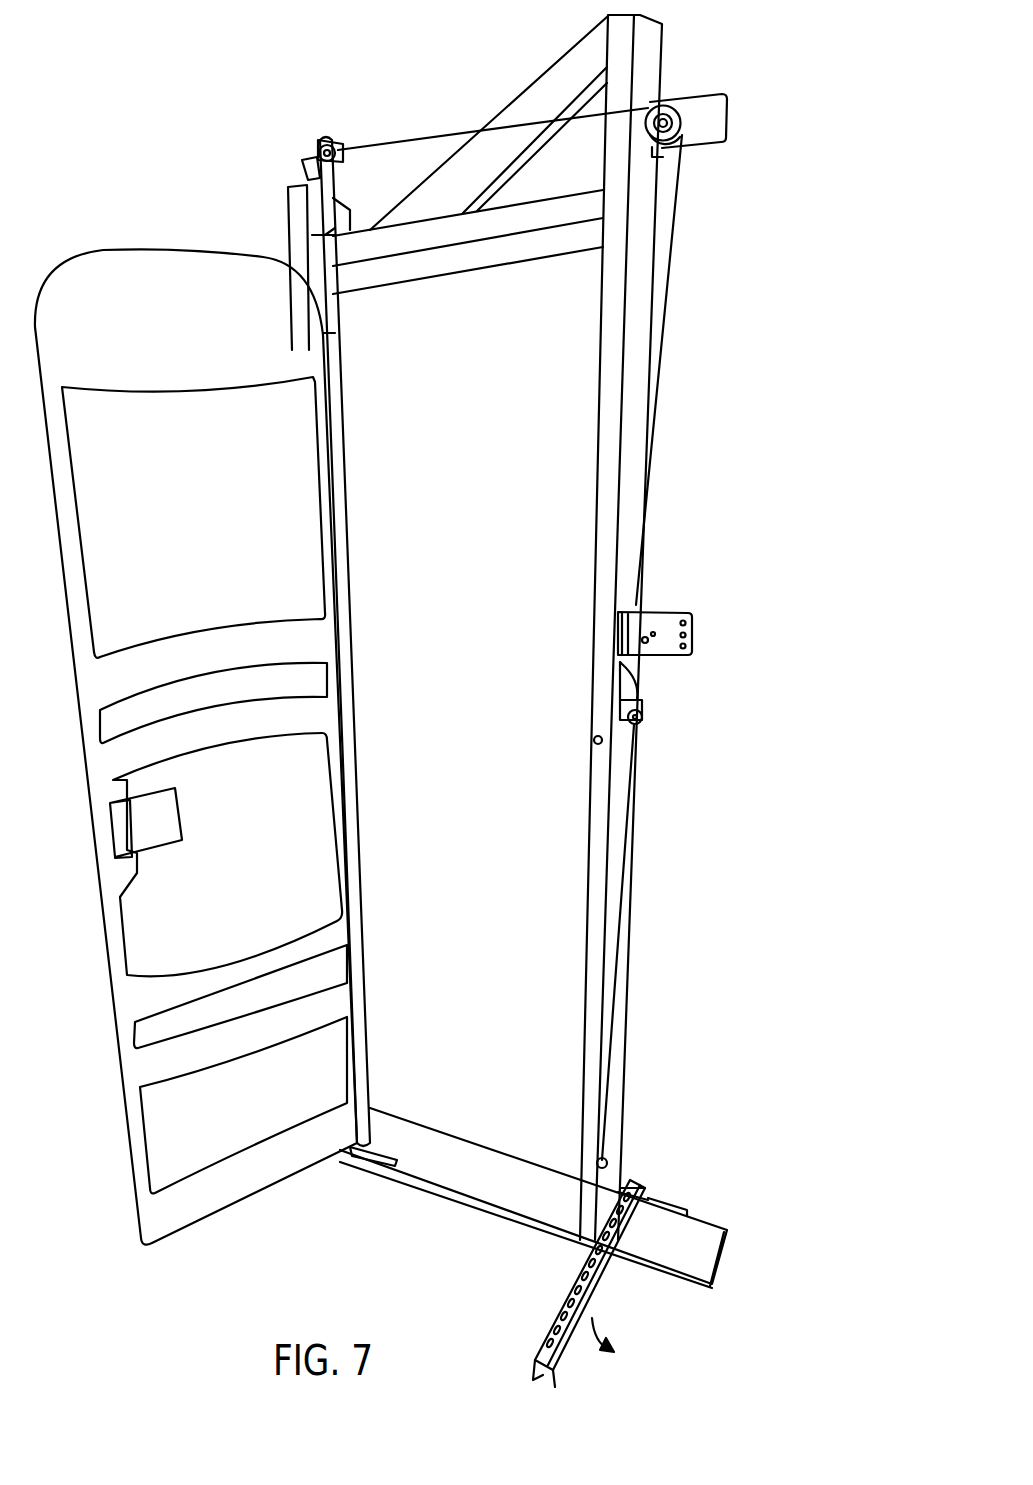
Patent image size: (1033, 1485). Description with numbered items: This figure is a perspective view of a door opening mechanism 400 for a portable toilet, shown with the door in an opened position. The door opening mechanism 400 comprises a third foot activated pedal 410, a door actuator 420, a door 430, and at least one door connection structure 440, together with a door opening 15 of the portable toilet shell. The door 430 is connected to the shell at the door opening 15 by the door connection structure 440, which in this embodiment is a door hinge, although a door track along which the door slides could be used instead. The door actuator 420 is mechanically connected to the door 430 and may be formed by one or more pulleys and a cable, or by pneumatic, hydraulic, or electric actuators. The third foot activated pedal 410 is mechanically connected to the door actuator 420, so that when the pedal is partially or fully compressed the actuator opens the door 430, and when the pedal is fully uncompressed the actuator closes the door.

The door opening 15 is at (480, 692).
The door opening mechanism 400 is at (778, 88).
The third foot activated pedal 410 is at (593, 1293).
The door actuator 420 is at (323, 132).
The door 430 is at (213, 532).
The door connection structure 440 is at (333, 443).